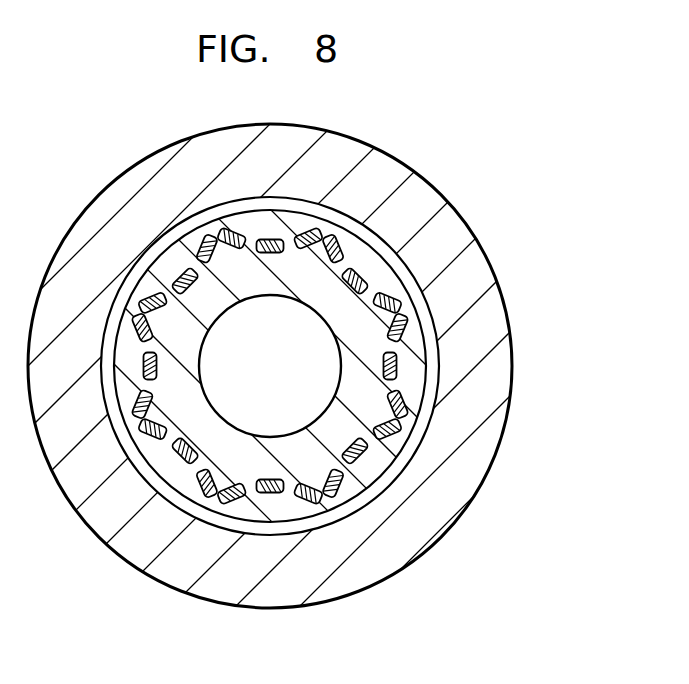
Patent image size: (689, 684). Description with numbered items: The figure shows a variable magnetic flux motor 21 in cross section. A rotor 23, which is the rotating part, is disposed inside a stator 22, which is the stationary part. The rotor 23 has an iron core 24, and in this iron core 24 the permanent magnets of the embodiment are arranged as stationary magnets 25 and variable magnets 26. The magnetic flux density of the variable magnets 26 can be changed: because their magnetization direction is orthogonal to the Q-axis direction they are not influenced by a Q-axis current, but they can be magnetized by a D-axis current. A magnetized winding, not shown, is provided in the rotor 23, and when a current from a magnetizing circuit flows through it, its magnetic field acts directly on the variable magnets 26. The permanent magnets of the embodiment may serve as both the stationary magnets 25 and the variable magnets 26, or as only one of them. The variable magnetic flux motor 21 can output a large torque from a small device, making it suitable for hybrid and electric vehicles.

The variable magnetic flux motor 21 is at (450, 128).
The stator 22 is at (497, 443).
The rotor 23 is at (490, 176).
The iron core 24 is at (383, 282).
The stationary magnets 25 is at (418, 293).
The variable magnets 26 is at (395, 358).